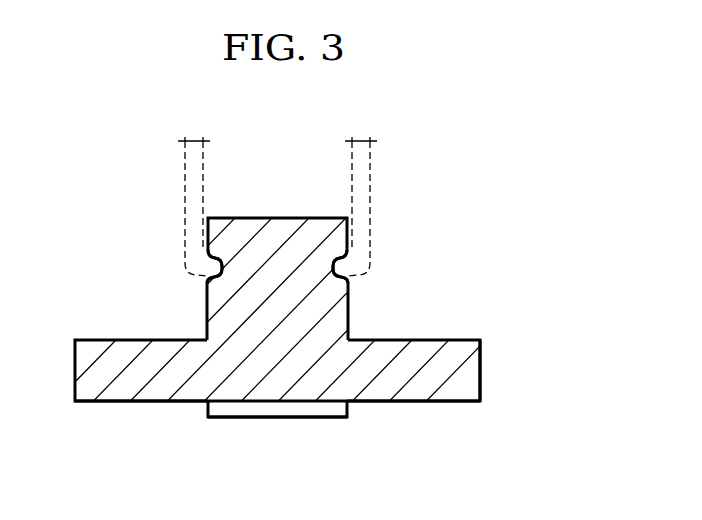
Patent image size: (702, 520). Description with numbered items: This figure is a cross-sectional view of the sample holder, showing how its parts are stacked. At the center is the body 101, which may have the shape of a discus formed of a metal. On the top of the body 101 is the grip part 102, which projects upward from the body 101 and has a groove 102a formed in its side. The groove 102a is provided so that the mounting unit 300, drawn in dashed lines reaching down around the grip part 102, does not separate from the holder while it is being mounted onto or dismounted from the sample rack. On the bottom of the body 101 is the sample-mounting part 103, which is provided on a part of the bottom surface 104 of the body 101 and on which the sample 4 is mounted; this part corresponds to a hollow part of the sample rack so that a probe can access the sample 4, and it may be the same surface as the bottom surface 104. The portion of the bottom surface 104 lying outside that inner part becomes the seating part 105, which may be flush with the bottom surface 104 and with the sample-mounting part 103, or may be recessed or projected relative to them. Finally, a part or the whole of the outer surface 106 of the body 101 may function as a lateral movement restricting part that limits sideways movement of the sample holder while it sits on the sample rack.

The body 101 is at (442, 340).
The grip part 102 is at (290, 218).
The groove 102a is at (320, 270).
The sample-mounting part 103 is at (305, 388).
The sample 4 is at (228, 413).
The bottom surface 104 is at (110, 402).
The seating part 105 is at (440, 402).
The outer surface 106 is at (480, 370).
The mounting unit 300 is at (370, 203).